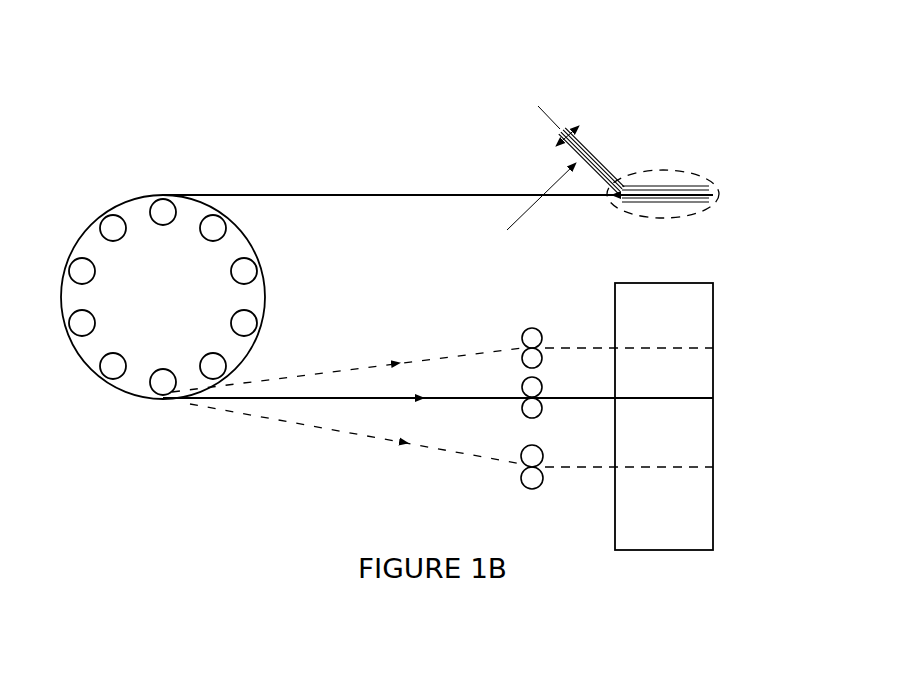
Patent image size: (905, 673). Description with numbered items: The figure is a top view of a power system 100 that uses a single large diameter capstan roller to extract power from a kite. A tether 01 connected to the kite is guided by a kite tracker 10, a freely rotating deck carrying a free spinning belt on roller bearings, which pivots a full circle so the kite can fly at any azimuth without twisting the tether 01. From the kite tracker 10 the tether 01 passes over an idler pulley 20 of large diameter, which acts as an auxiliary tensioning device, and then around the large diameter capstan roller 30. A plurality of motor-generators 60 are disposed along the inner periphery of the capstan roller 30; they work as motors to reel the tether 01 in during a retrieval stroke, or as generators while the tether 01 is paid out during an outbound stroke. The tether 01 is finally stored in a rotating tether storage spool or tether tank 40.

The power system 100 is at (196, 72).
The capstan roller 30 is at (121, 193).
The motor-generators 60 is at (74, 265).
The tether 01 is at (538, 100).
The kite tracker 10 is at (618, 132).
The idler pulley 20 is at (708, 180).
The tether tank 40 is at (683, 419).